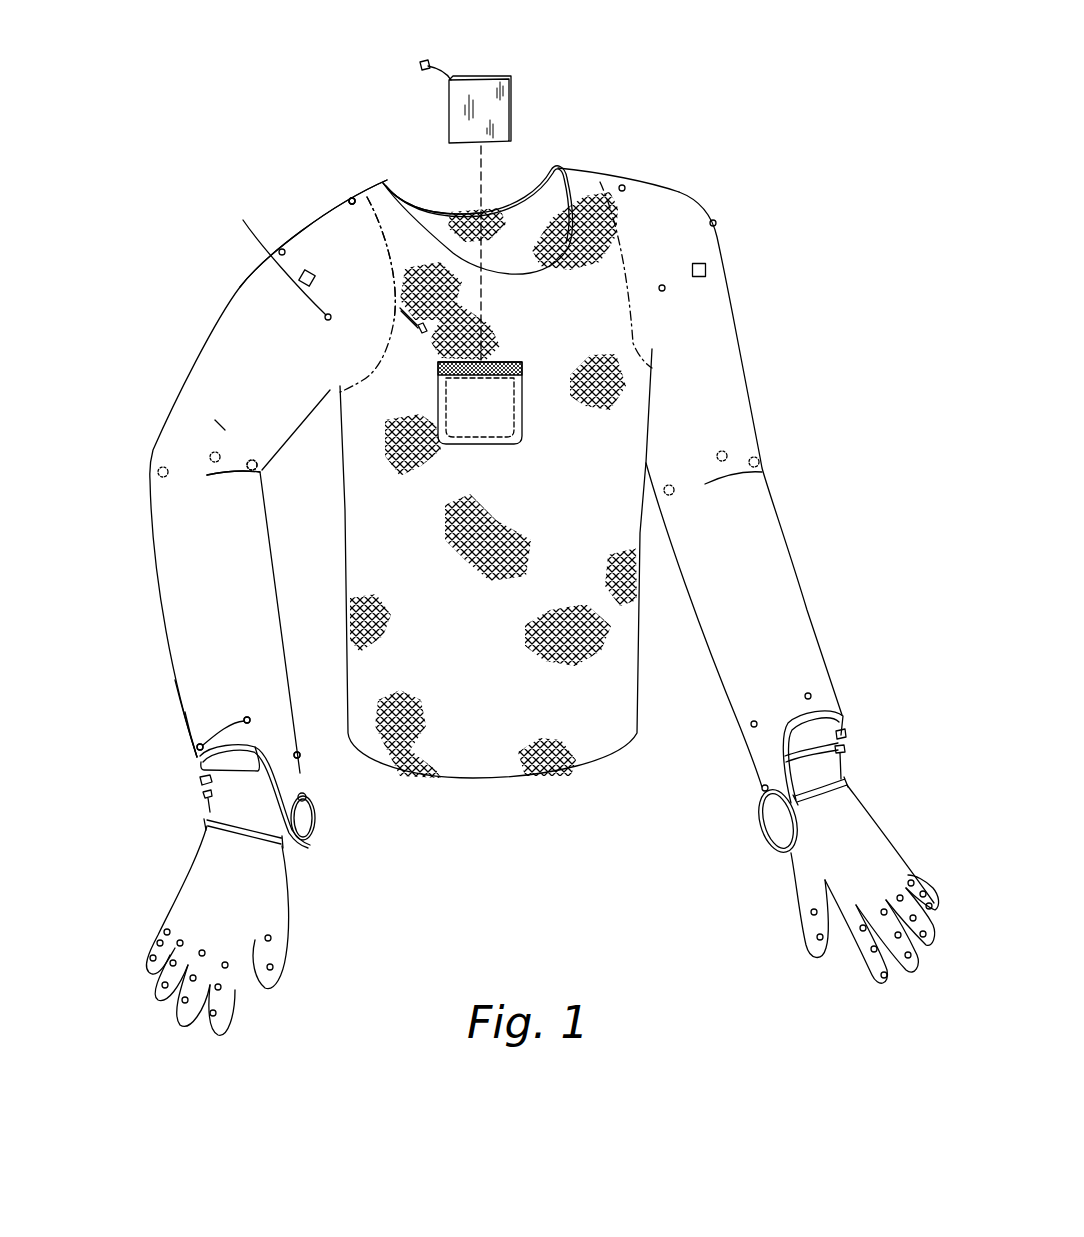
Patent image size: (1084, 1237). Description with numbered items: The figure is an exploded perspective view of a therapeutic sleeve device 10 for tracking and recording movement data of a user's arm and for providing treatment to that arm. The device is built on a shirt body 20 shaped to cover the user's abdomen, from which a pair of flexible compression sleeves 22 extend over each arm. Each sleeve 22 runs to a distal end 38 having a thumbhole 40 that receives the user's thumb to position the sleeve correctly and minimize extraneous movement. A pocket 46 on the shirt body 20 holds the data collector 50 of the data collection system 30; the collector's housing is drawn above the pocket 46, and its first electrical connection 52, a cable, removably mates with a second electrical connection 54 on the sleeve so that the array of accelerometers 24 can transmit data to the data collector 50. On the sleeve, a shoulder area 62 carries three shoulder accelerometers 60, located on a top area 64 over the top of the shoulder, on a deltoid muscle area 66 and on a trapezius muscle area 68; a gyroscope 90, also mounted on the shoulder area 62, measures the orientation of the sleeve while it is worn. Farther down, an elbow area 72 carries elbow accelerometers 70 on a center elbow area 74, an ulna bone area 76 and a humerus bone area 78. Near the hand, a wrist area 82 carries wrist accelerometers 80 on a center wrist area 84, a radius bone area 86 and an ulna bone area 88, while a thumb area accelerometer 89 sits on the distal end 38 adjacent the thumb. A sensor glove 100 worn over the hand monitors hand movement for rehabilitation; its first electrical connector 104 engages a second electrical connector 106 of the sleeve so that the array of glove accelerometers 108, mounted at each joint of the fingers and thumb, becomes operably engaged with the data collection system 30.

The therapeutic sleeve device 10 is at (173, 153).
The shirt body 20 is at (487, 745).
The flexible sleeve 22 is at (175, 568).
The array of accelerometers 24 is at (196, 748).
The data collection system 30 is at (496, 46).
The distal end 38 is at (300, 771).
The thumbhole 40 is at (311, 832).
The pocket 46 is at (503, 392).
The data collector 50 is at (511, 104).
The first electrical connection 52 is at (421, 66).
The second electrical connection 54 is at (400, 310).
The shoulder accelerometer 60 is at (348, 201).
The shoulder area 62 is at (349, 196).
The top area 64 is at (240, 288).
The deltoid muscle area 66 is at (366, 355).
The trapezius muscle area 68 is at (384, 184).
The elbow accelerometer 70 is at (213, 457).
The elbow area 72 is at (187, 472).
The center elbow area 74 is at (222, 428).
The ulna bone area 76 is at (160, 472).
The humerus bone area 78 is at (272, 453).
The wrist accelerometer 80 is at (297, 752).
The wrist area 82 is at (218, 705).
The center wrist area 84 is at (252, 696).
The radius bone area 86 is at (302, 758).
The ulna bone area 88 is at (188, 722).
The thumb area accelerometer 89 is at (307, 797).
The gyroscope 90 is at (313, 272).
The sensor glove 100 is at (195, 908).
The first electrical connector 104 is at (206, 812).
The second electrical connector 106 is at (202, 780).
The glove accelerometers 108 is at (228, 968).